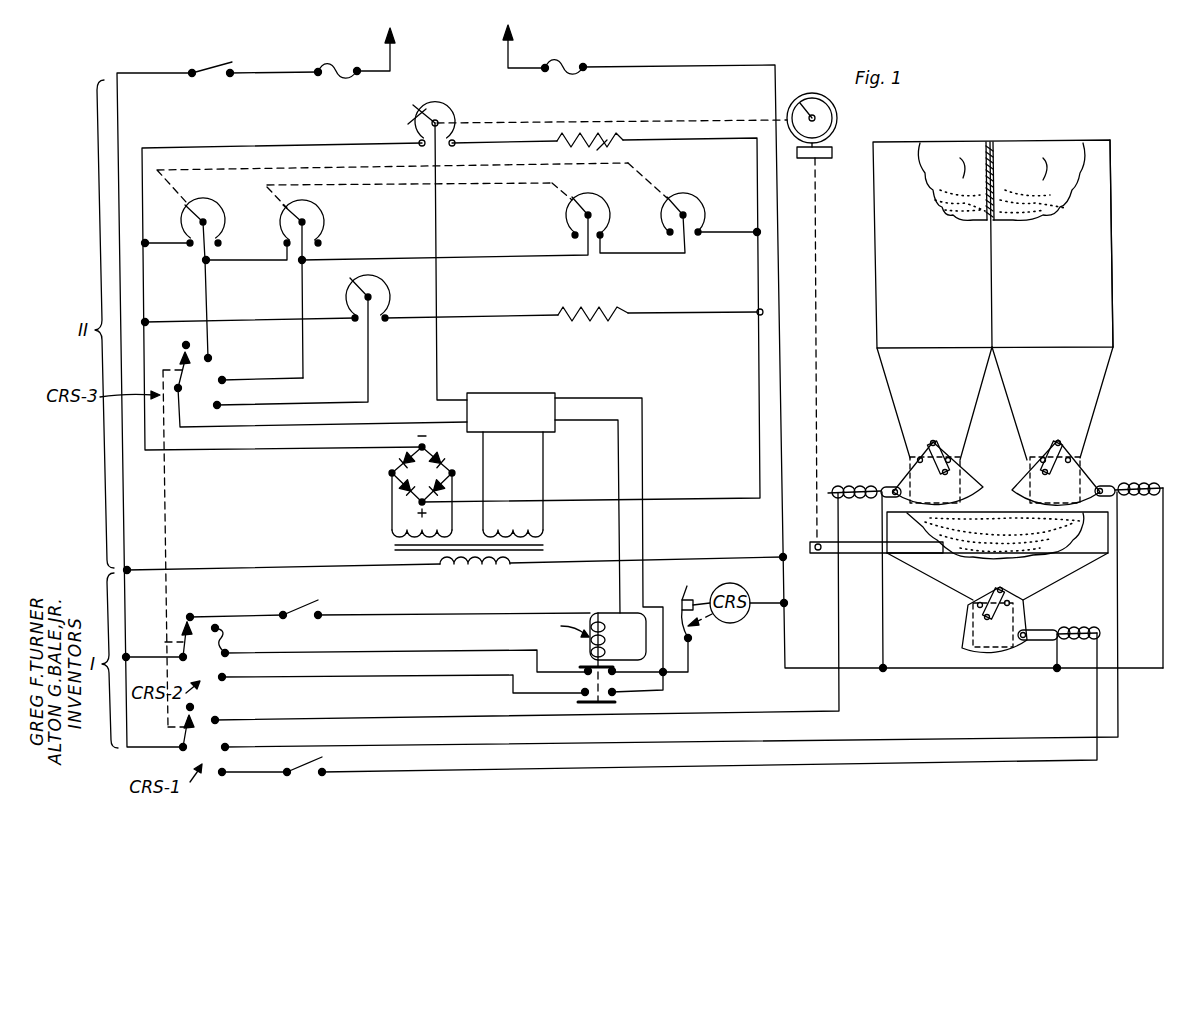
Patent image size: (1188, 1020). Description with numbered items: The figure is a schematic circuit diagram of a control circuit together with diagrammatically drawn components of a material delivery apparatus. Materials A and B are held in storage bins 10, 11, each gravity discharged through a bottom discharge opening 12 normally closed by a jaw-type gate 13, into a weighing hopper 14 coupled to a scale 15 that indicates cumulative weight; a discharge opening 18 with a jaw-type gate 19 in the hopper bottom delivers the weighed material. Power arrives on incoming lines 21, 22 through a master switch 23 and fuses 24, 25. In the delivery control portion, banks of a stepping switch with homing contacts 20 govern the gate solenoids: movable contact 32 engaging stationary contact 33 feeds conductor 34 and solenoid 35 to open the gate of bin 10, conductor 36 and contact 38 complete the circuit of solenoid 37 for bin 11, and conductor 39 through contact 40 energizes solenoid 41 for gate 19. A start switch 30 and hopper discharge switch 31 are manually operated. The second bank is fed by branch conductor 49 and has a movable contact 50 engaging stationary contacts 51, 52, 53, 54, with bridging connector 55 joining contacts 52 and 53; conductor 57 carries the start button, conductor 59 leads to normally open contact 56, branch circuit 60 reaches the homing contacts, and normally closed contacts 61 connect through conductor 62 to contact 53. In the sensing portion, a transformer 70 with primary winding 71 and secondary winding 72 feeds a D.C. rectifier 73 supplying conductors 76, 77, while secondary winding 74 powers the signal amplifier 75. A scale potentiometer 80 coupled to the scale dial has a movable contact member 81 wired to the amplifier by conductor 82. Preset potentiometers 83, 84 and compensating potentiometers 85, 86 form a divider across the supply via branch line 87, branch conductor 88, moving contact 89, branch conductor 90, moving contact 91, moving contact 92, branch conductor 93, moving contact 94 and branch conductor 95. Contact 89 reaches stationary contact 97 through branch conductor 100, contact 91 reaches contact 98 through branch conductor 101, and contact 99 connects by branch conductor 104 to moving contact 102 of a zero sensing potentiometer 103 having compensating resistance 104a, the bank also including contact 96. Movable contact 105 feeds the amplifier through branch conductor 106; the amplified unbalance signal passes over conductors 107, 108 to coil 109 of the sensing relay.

The storage bin 10 is at (882, 231).
The storage bin 11 is at (1106, 228).
The discharge opening 12 is at (912, 460).
The gate 13 is at (906, 477).
The weighing hopper 14 is at (1058, 568).
The scale 15 is at (836, 150).
The discharge opening 18 is at (972, 605).
The jaw-type gate 19 is at (966, 642).
The homing contacts 20 is at (684, 600).
The incoming line 21 is at (172, 70).
The incoming line 22 is at (736, 66).
The master switch 23 is at (215, 61).
The fuse 24 is at (333, 66).
The fuse 25 is at (564, 63).
The start switch 30 is at (306, 605).
The hopper discharge switch 31 is at (305, 763).
The movable contact 32 is at (181, 732).
The stationary contact 33 is at (217, 720).
The conductor 34 is at (458, 716).
The solenoid 35 is at (845, 488).
The conductor 36 is at (451, 731).
The solenoid 37 is at (1143, 485).
The stationary contact 38 is at (228, 746).
The conductor 39 is at (442, 770).
The contact 40 is at (222, 774).
The solenoid 41 is at (1066, 633).
The branch conductor 49 is at (146, 665).
The movable contact 50 is at (183, 638).
The stationary contact 51 is at (192, 615).
The stationary contact 52 is at (216, 641).
The stationary contact 53 is at (228, 661).
The contact 54 is at (223, 680).
The bridging connector 55 is at (233, 637).
The normally open contact 56 is at (616, 694).
The conductor 57 is at (462, 610).
The conductor 59 is at (438, 674).
The branch circuit 60 is at (690, 655).
The normally closed contacts 61 is at (586, 674).
The conductor 62 is at (444, 634).
The transformer 70 is at (552, 546).
The primary winding 71 is at (509, 566).
The secondary winding 72 is at (392, 534).
The D.C. rectifier 73 is at (392, 472).
The secondary winding 74 is at (522, 519).
The signal amplifier 75 is at (532, 391).
The conductor 76 is at (338, 146).
The conductor 77 is at (692, 138).
The scale potentiometer 80 is at (458, 113).
The movable contact member 81 is at (412, 122).
The conductor 82 is at (440, 215).
The preset potentiometer 83 is at (219, 204).
The preset potentiometer 84 is at (326, 213).
The compensating potentiometer 85 is at (702, 203).
The compensating potentiometer 86 is at (610, 208).
The branch line 87 is at (163, 247).
The branch conductor 88 is at (245, 263).
The moving contact 89 is at (186, 214).
The branch conductor 90 is at (521, 252).
The moving contact 91 is at (285, 215).
The moving contact 92 is at (568, 213).
The branch conductor 93 is at (633, 255).
The moving contact 94 is at (661, 214).
The branch conductor 95 is at (725, 236).
The stationary contact 96 is at (187, 344).
The stationary contact 97 is at (211, 357).
The stationary contact 98 is at (224, 379).
The stationary contact 99 is at (219, 404).
The branch conductor 100 is at (212, 305).
The branch conductor 101 is at (301, 311).
The moving contact 102 is at (376, 280).
The zero sensing potentiometer 103 is at (392, 302).
The branch conductor 104 is at (374, 372).
The compensating resistance 104a is at (616, 318).
The movable contact 105 is at (186, 372).
The branch conductor 106 is at (268, 427).
The conductor 107 is at (611, 398).
The conductor 108 is at (585, 423).
The coil 109 is at (604, 630).